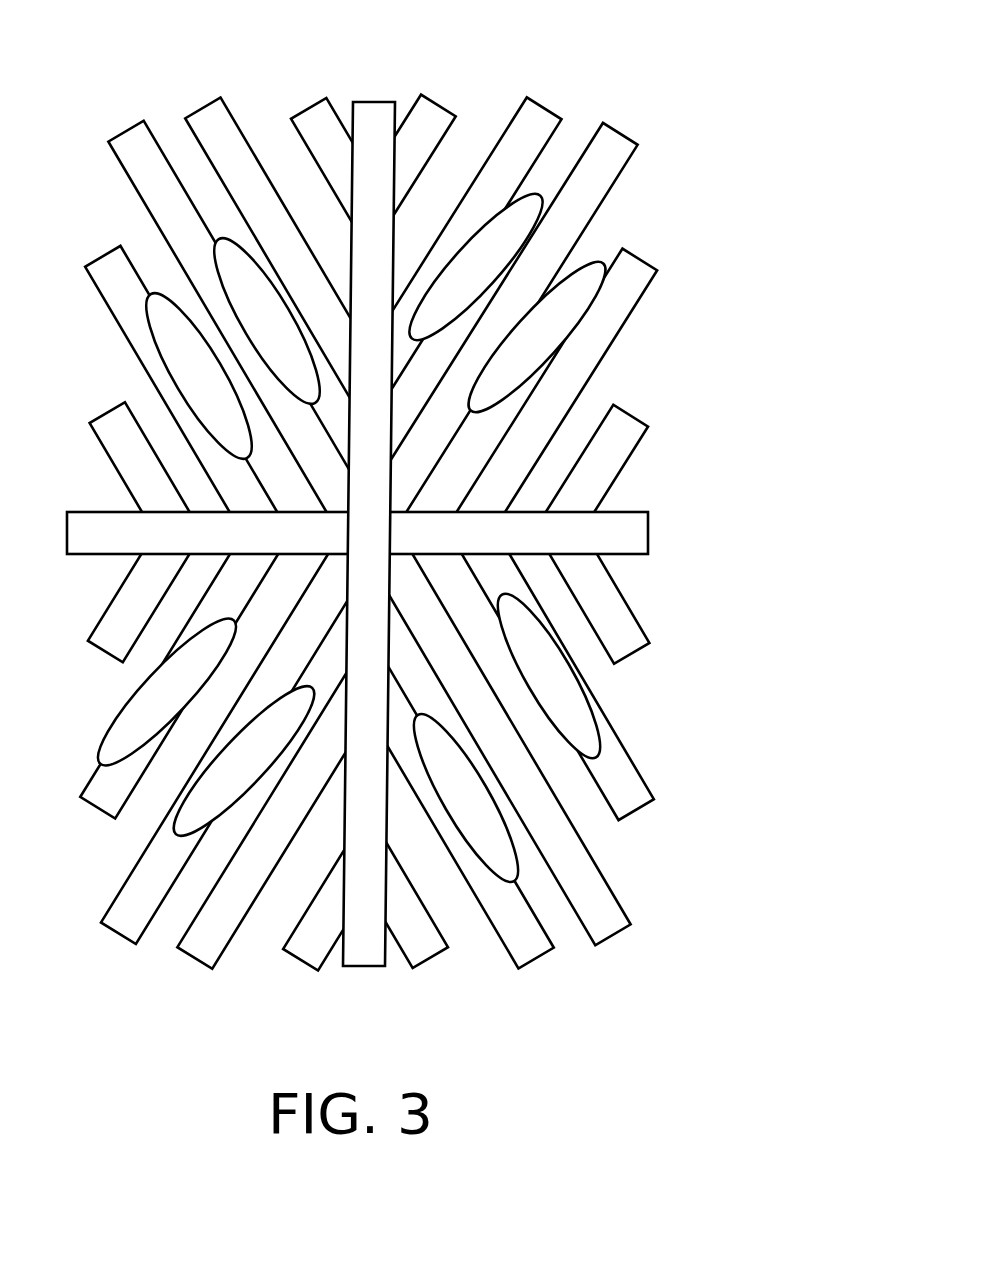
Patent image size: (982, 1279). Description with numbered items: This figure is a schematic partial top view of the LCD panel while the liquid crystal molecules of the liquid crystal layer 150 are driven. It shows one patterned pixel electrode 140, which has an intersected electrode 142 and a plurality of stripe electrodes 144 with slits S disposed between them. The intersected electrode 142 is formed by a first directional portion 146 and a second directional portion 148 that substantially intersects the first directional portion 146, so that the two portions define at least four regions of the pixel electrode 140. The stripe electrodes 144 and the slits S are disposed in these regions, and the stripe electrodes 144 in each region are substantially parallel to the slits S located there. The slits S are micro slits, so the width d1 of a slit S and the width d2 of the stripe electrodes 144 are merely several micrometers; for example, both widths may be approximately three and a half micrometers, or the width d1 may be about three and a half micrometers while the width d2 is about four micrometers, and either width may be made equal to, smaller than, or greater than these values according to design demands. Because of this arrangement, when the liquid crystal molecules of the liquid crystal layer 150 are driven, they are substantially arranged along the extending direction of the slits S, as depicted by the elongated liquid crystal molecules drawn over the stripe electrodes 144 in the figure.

The patterned pixel electrode 140 is at (449, 533).
The intersected electrode 142 is at (447, 534).
The stripe electrodes 144 is at (617, 440).
The first directional portion 146 is at (635, 536).
The second directional portion 148 is at (365, 705).
The liquid crystal layer 150 is at (565, 306).
The slits S is at (302, 175).
The width of the slit d1 is at (238, 81).
The width of the stripe electrodes d2 is at (104, 100).